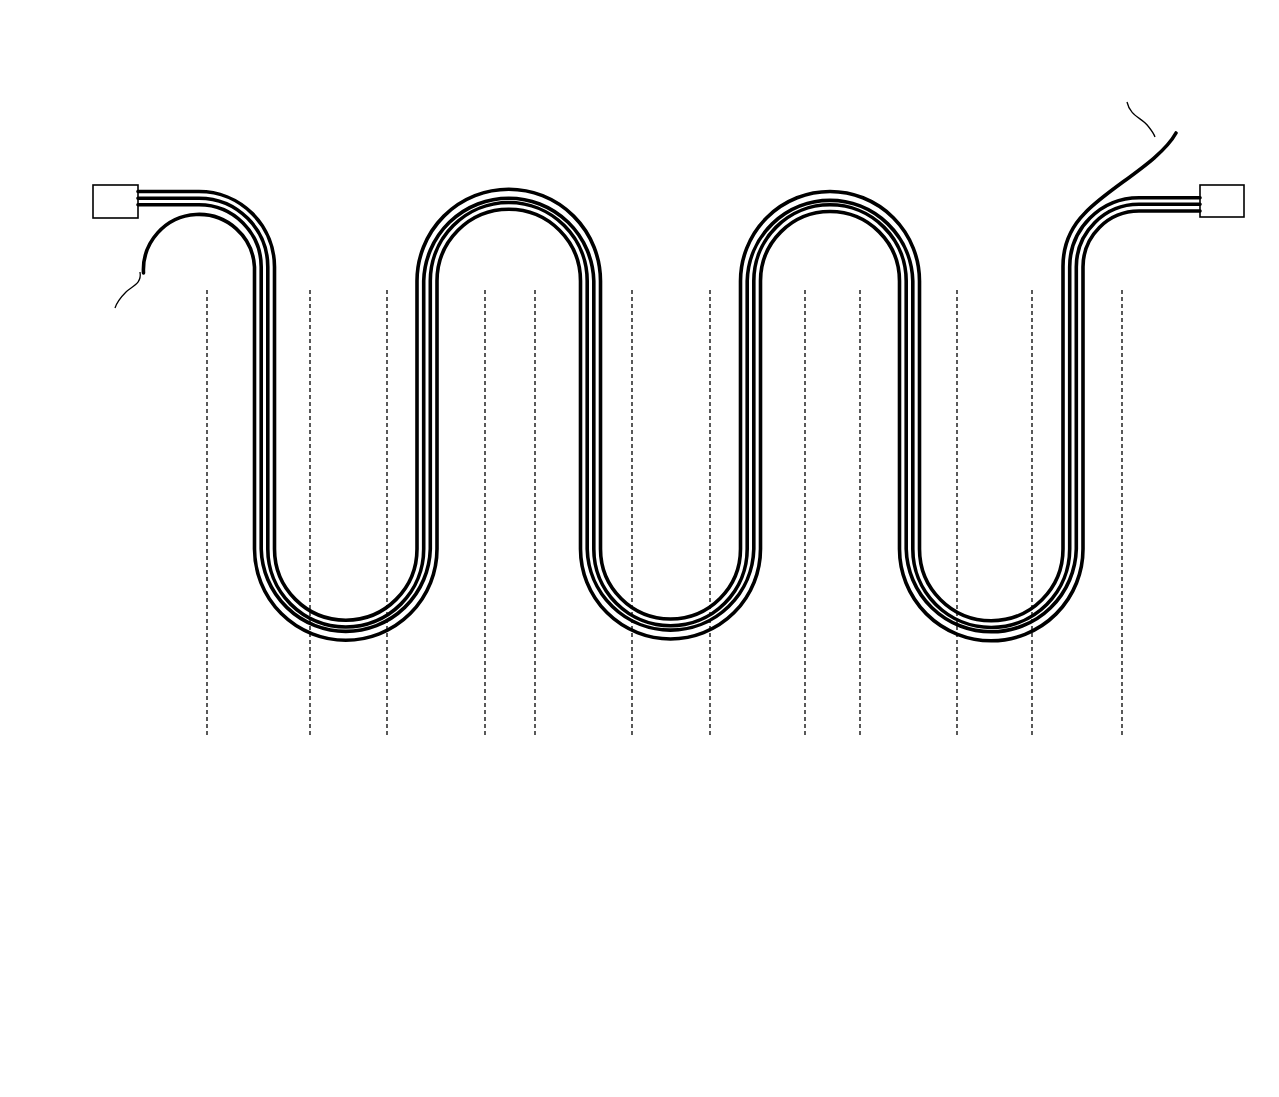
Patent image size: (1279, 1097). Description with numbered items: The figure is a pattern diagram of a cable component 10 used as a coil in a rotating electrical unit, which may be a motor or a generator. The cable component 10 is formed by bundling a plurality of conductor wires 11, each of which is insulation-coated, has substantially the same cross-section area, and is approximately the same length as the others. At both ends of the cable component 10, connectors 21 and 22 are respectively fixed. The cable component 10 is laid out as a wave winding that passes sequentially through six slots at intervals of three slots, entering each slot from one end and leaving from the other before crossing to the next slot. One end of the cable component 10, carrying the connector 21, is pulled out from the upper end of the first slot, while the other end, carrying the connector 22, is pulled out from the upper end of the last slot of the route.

The cable component 10 is at (690, 104).
The conductor wire 11 is at (478, 194).
The connector 21 is at (113, 186).
The connector 22 is at (1221, 186).